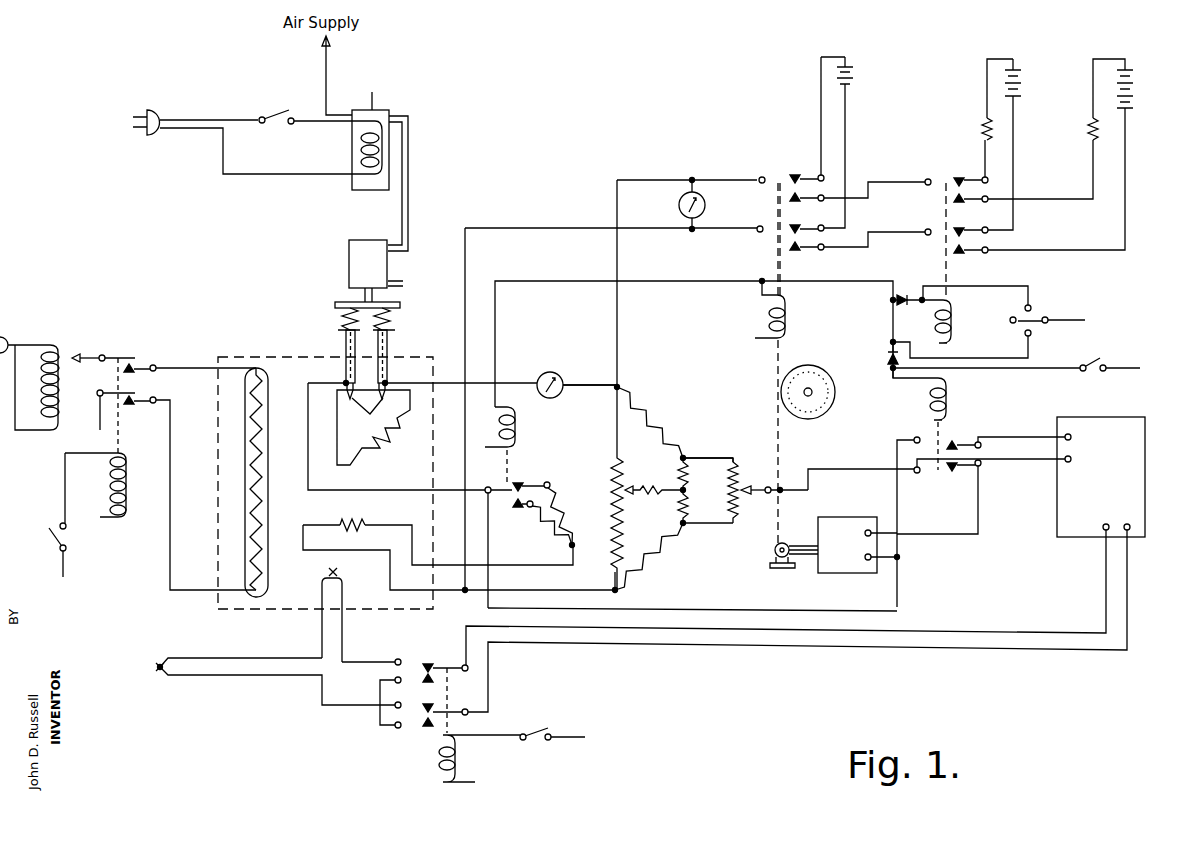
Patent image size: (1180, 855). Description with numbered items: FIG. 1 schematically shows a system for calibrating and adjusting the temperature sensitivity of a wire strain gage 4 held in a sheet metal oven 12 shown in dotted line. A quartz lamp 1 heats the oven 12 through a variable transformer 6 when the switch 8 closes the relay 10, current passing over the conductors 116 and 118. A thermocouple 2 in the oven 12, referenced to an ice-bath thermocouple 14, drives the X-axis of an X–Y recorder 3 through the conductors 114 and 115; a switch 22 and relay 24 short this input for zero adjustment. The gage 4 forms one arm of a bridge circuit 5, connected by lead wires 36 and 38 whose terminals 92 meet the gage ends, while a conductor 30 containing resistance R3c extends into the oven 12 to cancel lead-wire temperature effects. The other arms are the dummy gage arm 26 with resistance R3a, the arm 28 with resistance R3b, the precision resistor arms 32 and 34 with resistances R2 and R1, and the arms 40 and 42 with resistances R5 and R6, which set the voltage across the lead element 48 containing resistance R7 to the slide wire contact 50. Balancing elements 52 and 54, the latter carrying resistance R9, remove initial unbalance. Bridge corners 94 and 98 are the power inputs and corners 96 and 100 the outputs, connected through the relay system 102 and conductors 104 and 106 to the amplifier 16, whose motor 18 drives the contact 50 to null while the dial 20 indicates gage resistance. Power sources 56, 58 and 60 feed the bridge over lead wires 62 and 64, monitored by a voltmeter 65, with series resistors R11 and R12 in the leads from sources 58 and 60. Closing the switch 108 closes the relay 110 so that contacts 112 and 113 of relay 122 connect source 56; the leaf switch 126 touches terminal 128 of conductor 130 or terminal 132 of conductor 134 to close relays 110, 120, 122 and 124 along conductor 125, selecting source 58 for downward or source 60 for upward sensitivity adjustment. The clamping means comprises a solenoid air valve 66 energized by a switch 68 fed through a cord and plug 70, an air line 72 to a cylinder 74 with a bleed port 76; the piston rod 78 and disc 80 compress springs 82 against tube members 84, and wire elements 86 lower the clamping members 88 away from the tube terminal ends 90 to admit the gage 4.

The quartz lamp 1 is at (270, 495).
The thermocouple 2 is at (330, 572).
The X–Y recorder 3 is at (1147, 488).
The wire strain gage 4 is at (385, 440).
The bridge circuit 5 is at (621, 384).
The variable transformer 6 is at (62, 356).
The switch 8 is at (50, 546).
The relay 10 is at (127, 492).
The sheet metal oven 12 is at (218, 460).
The reference thermocouple 14 is at (160, 672).
The amplifier 16 is at (840, 517).
The motor 18 is at (772, 550).
The dial 20 is at (836, 393).
The switch 22 is at (532, 733).
The relay 24 is at (440, 761).
The bridge arm 26 is at (560, 546).
The bridge arm 28 is at (550, 482).
The conductor 30 is at (504, 566).
The precision resistor arm 32 is at (666, 545).
The precision resistor arm 34 is at (673, 446).
The lead wire 36 is at (510, 382).
The lead wire 38 is at (370, 492).
The bridge arm 40 is at (678, 508).
The bridge arm 42 is at (676, 486).
The lead element 48 is at (715, 458).
The slide wire contact 50 is at (766, 487).
The bridge balancing resistor element 52 is at (645, 495).
The bridge balancing resistor element 54 is at (619, 432).
The battery 56 is at (855, 67).
The battery 58 is at (1022, 70).
The battery 60 is at (1133, 70).
The lead wire 62 is at (722, 178).
The lead wire 64 is at (533, 228).
The voltmeter 65 is at (706, 205).
The solenoid actuated air valve 66 is at (385, 108).
The switch 68 is at (282, 110).
The cord and plug 70 is at (152, 135).
The air line 72 is at (409, 201).
The air cylinder 74 is at (349, 255).
The port 76 is at (400, 281).
The piston rod 78 is at (360, 296).
The terminal disc 80 is at (335, 304).
The spring elements 82 is at (345, 316).
The tube members 84 is at (343, 365).
The wire clamp attachment means 86 is at (400, 310).
The clamping members 88 is at (367, 416).
The tube terminal ends 90 is at (345, 386).
The terminals 92 is at (381, 393).
The bridge terminal 94 is at (612, 385).
The bridge terminal 96 is at (766, 495).
The bridge terminal 98 is at (612, 588).
The bridge terminal 100 is at (487, 494).
The relay system 102 is at (982, 450).
The conductor 104 is at (832, 470).
The conductor 106 is at (686, 609).
The switch 108 is at (1090, 374).
The relay 110 is at (948, 401).
The relay contact 112 is at (805, 176).
The relay contact 113 is at (812, 226).
The conductor 114 is at (912, 633).
The conductor 115 is at (908, 651).
The conductor 116 is at (178, 366).
The conductor 118 is at (170, 560).
The relay 120 is at (516, 430).
The relay 122 is at (790, 314).
The relay 124 is at (952, 324).
The conductor 125 is at (694, 281).
The leaf switch 126 is at (1018, 326).
The terminal 128 is at (1032, 333).
The conductor 130 is at (1030, 355).
The terminal 132 is at (1031, 307).
The conductor 134 is at (965, 286).
The precision resistance R1 is at (650, 422).
The precision resistance R2 is at (649, 563).
The dummy gage resistance R3a is at (542, 525).
The wire resistor R3b is at (569, 516).
The lead compensating resistance R3c is at (352, 538).
The sensitivity resistance R5 is at (692, 508).
The sensitivity resistance R6 is at (692, 474).
The slide wire resistance R7 is at (725, 490).
The bridge balancing resistance R9 is at (603, 522).
The series resistor R11 is at (972, 131).
The series resistor R12 is at (1079, 131).